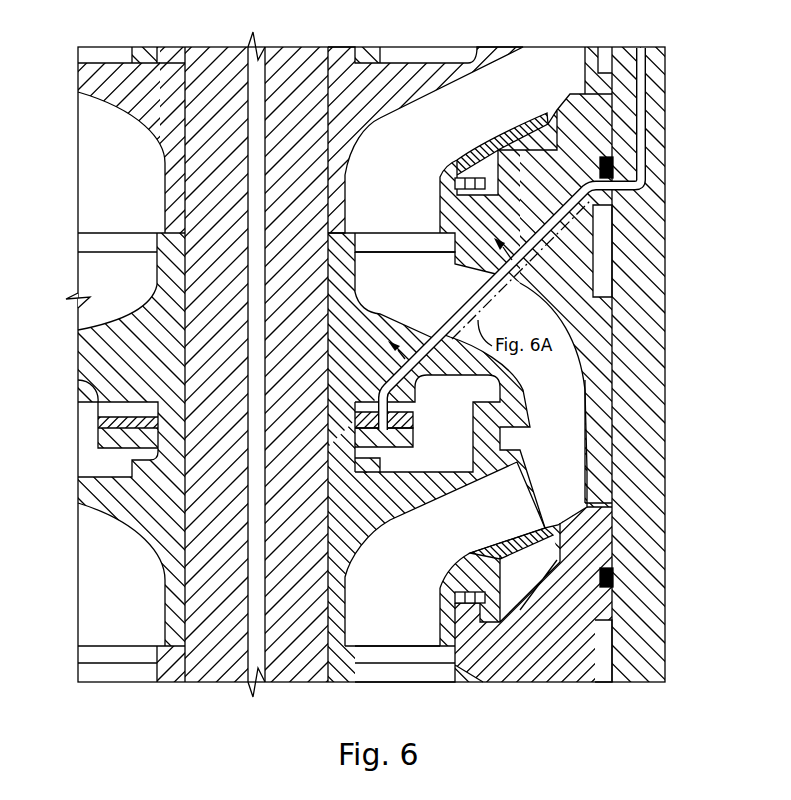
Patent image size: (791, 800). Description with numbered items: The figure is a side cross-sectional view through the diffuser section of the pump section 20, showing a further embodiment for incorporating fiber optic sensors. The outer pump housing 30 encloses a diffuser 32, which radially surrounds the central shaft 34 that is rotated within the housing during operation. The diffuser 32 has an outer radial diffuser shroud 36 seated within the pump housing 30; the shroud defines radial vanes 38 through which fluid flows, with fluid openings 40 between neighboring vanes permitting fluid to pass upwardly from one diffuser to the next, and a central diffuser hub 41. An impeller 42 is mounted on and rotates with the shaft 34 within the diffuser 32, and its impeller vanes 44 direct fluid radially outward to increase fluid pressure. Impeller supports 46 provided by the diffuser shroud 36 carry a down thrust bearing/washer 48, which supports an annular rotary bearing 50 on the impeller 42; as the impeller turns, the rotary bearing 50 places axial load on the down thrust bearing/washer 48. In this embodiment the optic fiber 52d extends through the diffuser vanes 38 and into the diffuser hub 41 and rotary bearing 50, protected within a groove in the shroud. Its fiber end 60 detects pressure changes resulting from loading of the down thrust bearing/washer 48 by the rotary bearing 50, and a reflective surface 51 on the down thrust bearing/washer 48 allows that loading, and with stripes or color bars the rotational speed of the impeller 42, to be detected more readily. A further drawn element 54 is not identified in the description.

The pump section 20 is at (670, 111).
The outer pump housing 30 is at (655, 590).
The diffuser 32 is at (616, 257).
The central shaft 34 is at (183, 168).
The outer radial diffuser shroud 36 is at (605, 350).
The radial vanes 38 is at (537, 318).
The fluid openings 40 is at (455, 240).
The central diffuser hub 41 is at (376, 308).
The impeller 42 is at (108, 521).
The impeller vanes 44 is at (355, 562).
The impeller supports 46 is at (507, 437).
The down thrust bearing/washer 48 is at (413, 440).
The annular rotary bearing 50 is at (413, 424).
The reflective surface 51 is at (100, 418).
The optic fiber 52d is at (650, 182).
The conduit 54 is at (650, 191).
The fiber end 60 is at (388, 432).